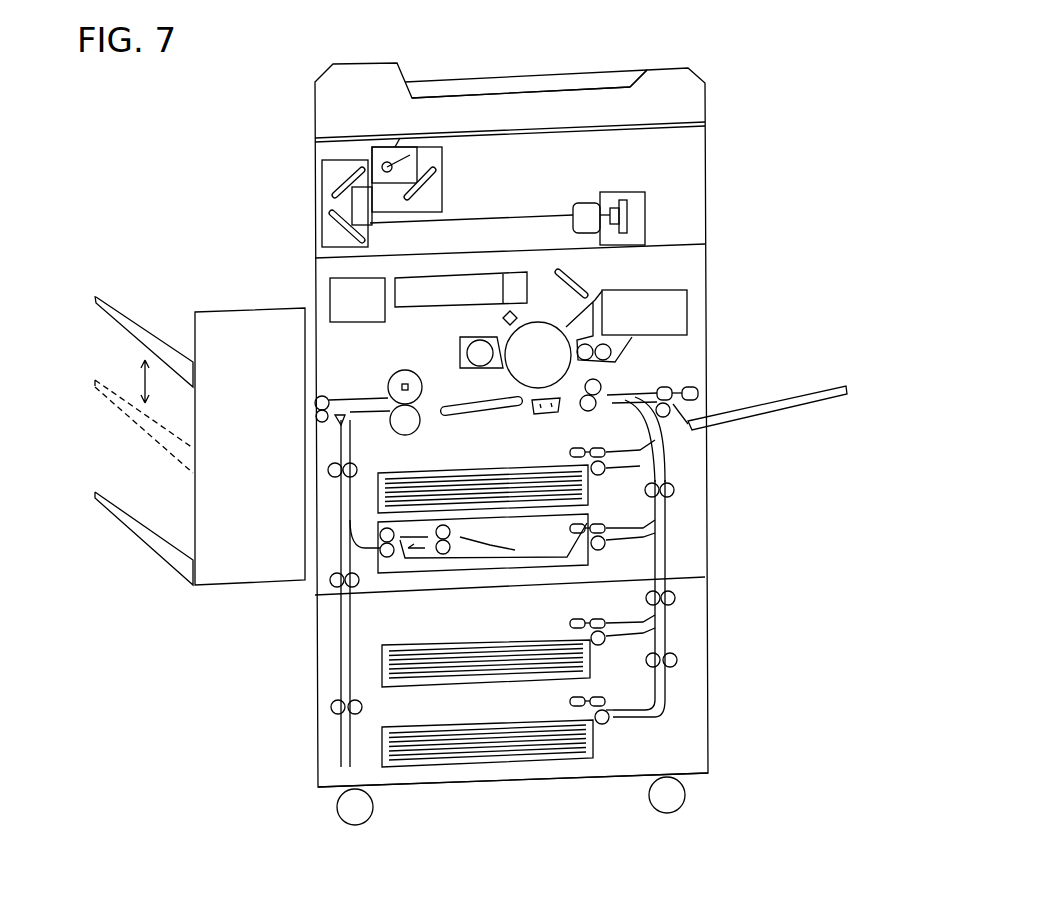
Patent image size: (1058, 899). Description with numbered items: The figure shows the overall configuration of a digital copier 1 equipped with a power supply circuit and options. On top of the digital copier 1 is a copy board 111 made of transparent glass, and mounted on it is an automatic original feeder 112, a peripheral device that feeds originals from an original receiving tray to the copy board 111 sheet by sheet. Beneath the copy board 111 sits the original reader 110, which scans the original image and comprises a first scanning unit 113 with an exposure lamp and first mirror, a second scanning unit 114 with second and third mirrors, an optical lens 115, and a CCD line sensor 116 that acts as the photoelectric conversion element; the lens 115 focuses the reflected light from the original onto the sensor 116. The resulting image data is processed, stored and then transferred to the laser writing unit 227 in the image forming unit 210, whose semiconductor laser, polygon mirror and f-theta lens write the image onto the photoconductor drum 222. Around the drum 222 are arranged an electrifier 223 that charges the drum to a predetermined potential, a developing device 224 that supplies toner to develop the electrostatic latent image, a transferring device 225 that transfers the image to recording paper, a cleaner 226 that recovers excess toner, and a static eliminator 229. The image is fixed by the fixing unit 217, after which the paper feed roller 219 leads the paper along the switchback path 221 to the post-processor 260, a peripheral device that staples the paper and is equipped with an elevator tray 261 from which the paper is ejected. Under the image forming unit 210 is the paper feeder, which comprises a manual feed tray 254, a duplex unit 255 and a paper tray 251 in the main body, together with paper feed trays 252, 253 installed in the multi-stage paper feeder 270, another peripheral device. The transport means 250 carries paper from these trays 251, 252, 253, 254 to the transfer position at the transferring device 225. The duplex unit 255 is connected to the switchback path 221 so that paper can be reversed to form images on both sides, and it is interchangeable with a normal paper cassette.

The digital copier 1 is at (860, 192).
The original reader 110 is at (672, 167).
The copy board 111 is at (505, 127).
The automatic original feeder 112 is at (577, 108).
The first scanning unit 113 is at (442, 203).
The second scanning unit 114 is at (330, 207).
The optical lens 115 is at (573, 205).
The CCD line sensor 116 is at (615, 193).
The image forming unit 210 is at (688, 265).
The fixing unit 217 is at (422, 387).
The paper feed roller 219 is at (335, 398).
The switchback path 221 is at (345, 440).
The photoconductor drum 222 is at (593, 312).
The electrifier 223 is at (505, 278).
The developing device 224 is at (632, 325).
The transferring device 225 is at (555, 414).
The cleaner 226 is at (480, 340).
The laser writing unit 227 is at (425, 307).
The static eliminator 229 is at (535, 412).
The transport means 250 is at (678, 455).
The paper tray 251 is at (415, 463).
The paper feed tray 252 is at (518, 651).
The paper feed tray 253 is at (497, 732).
The manual feed tray 254 is at (772, 397).
The duplex unit 255 is at (516, 557).
The post-processor 260 is at (223, 307).
The elevator tray 261 is at (100, 297).
The multi-stage paper feeder 270 is at (697, 628).